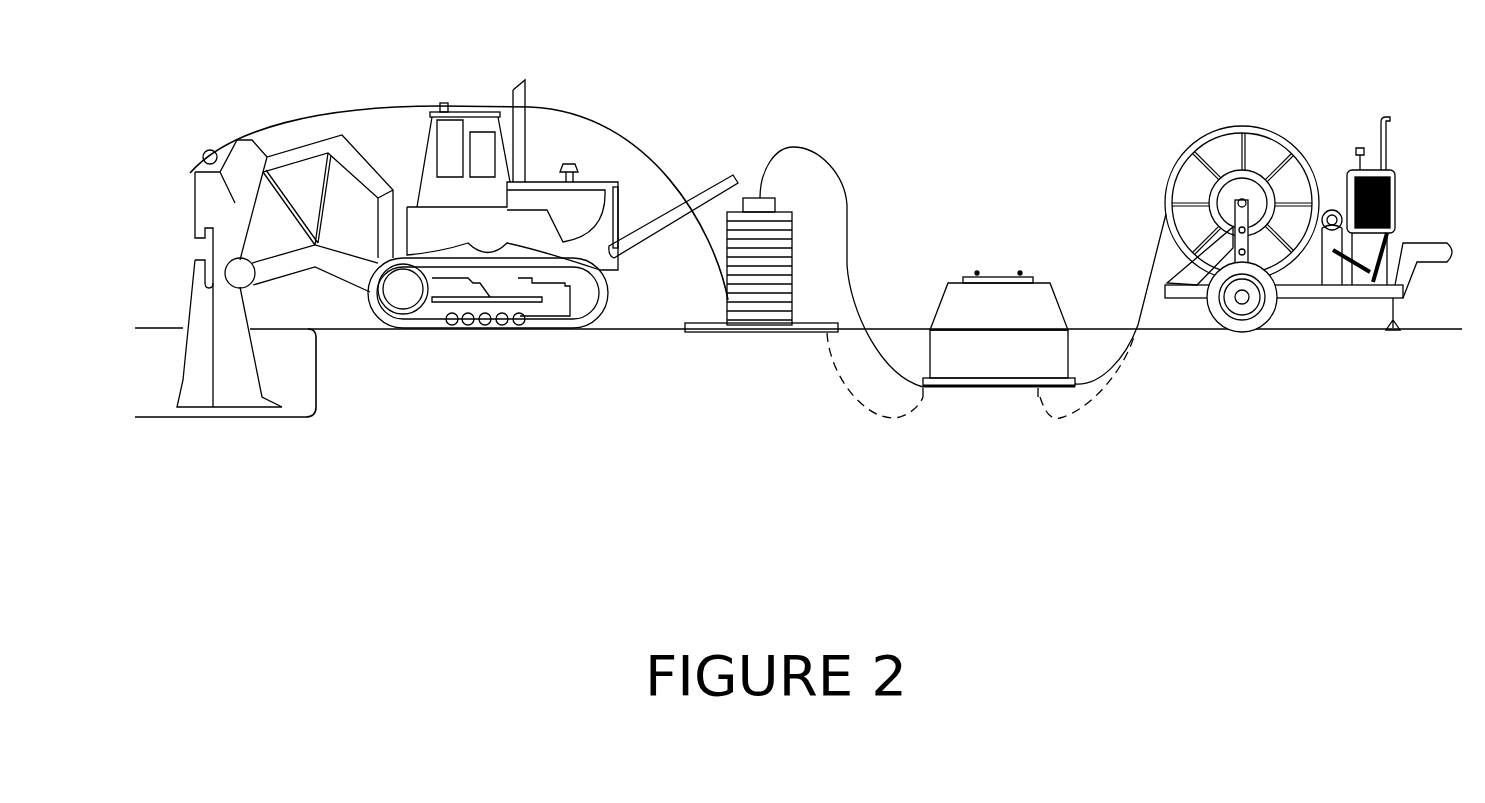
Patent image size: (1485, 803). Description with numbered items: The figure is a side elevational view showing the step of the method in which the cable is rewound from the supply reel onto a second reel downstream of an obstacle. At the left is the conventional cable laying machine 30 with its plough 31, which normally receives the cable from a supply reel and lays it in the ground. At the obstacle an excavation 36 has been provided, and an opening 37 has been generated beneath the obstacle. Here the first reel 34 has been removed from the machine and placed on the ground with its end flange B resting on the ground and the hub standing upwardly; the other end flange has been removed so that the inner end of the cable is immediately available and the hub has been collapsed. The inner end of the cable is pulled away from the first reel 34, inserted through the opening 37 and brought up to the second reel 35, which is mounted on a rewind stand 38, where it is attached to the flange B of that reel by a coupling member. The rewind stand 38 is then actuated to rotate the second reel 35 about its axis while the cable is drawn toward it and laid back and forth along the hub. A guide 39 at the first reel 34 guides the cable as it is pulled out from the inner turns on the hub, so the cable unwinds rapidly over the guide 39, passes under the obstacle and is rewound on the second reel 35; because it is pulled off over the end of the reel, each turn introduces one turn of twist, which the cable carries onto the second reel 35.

The cable laying machine 30 is at (449, 133).
The plough 31 is at (233, 380).
The first reel 34 is at (801, 261).
The second reel 35 is at (1253, 118).
The excavation 36 is at (868, 419).
The opening 37 is at (1006, 412).
The rewind stand 38 is at (1326, 156).
The guide 39 is at (804, 135).
The end flange B is at (707, 339).